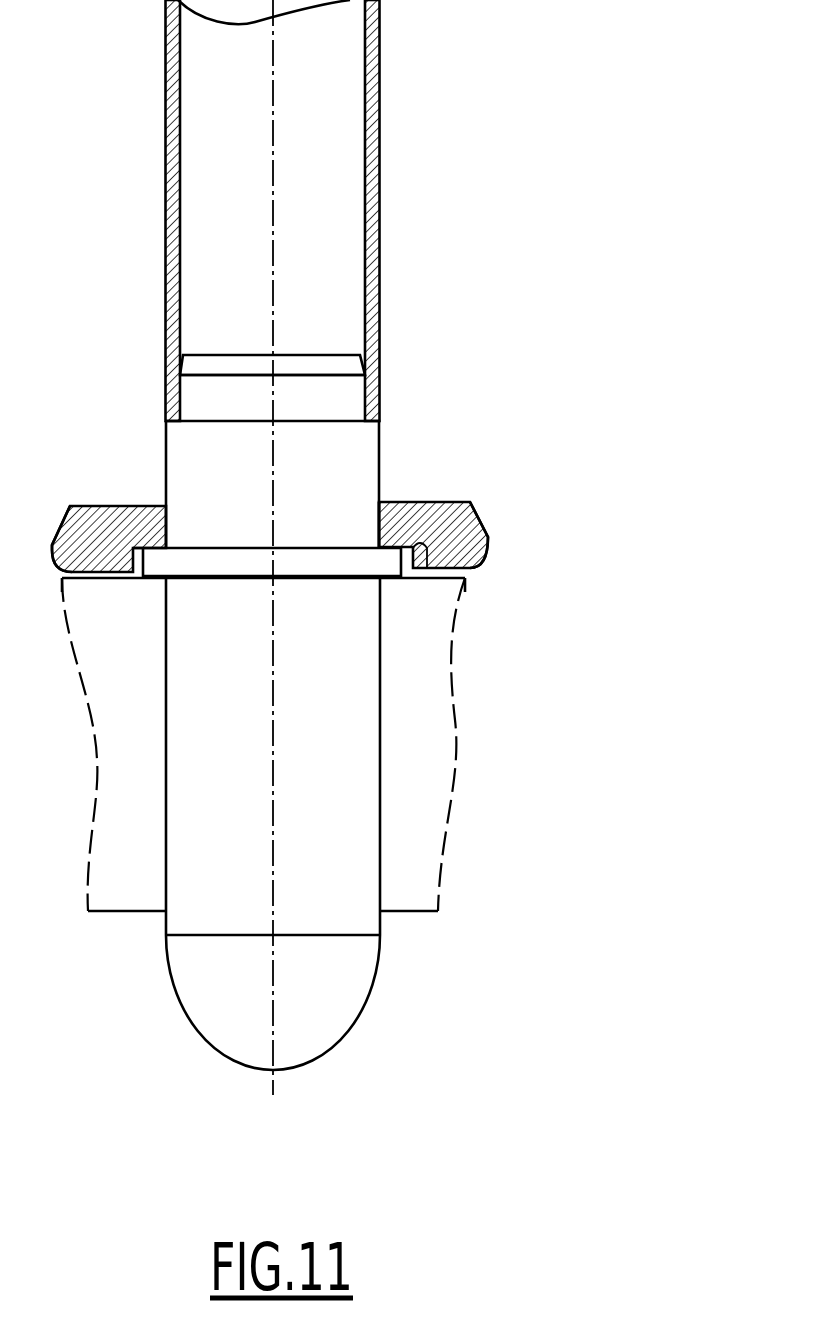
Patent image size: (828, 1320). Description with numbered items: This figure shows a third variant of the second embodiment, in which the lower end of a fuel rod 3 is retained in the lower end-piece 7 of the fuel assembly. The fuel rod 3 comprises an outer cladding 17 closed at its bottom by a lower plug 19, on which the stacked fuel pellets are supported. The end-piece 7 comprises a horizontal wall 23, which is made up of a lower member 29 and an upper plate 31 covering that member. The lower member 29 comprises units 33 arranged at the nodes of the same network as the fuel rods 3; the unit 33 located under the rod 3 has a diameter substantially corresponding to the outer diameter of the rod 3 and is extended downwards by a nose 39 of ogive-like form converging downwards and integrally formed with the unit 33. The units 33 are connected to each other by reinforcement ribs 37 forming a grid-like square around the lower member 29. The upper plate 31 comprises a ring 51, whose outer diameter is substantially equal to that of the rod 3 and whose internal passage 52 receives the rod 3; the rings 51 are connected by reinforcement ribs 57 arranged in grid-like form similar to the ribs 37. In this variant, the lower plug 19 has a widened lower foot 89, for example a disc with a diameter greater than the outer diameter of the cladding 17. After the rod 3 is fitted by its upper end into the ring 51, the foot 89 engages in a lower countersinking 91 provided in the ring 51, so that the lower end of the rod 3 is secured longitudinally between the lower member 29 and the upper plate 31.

The nuclear fuel rod 3 is at (384, 321).
The end-piece 7 is at (545, 810).
The outer cladding 17 is at (372, 228).
The lower plug 19 is at (352, 447).
The horizontal wall 23 is at (592, 658).
The lower member 29 is at (495, 770).
The upper plate 31 is at (300, 511).
The unit 33 is at (327, 876).
The reinforcement rib 37 is at (143, 893).
The nose 39 is at (325, 1010).
The ring 51 is at (140, 506).
The internal passage 52 is at (390, 502).
The reinforcement rib 57 is at (85, 535).
The widened lower foot 89 is at (237, 562).
The lower countersinking 91 is at (426, 572).